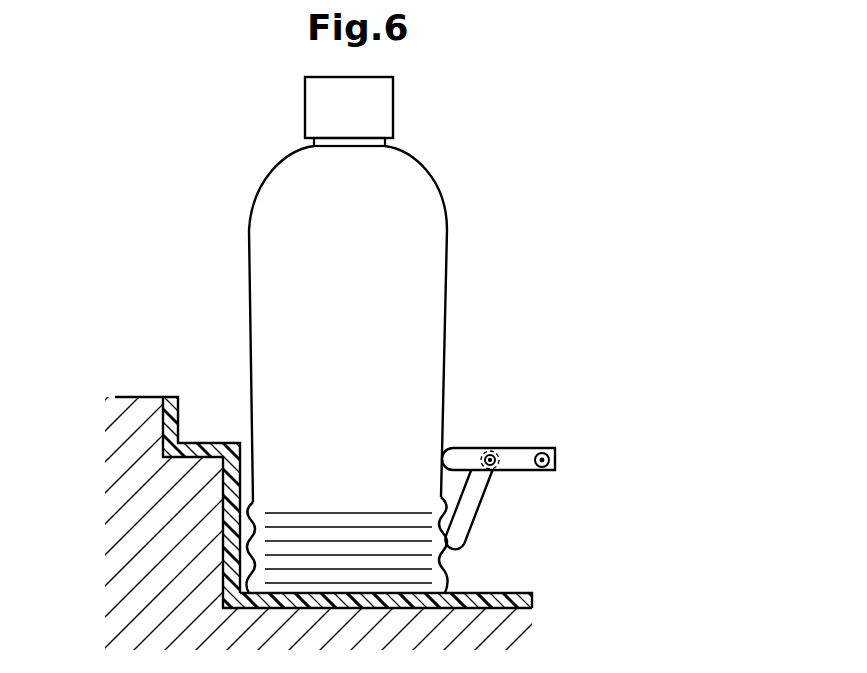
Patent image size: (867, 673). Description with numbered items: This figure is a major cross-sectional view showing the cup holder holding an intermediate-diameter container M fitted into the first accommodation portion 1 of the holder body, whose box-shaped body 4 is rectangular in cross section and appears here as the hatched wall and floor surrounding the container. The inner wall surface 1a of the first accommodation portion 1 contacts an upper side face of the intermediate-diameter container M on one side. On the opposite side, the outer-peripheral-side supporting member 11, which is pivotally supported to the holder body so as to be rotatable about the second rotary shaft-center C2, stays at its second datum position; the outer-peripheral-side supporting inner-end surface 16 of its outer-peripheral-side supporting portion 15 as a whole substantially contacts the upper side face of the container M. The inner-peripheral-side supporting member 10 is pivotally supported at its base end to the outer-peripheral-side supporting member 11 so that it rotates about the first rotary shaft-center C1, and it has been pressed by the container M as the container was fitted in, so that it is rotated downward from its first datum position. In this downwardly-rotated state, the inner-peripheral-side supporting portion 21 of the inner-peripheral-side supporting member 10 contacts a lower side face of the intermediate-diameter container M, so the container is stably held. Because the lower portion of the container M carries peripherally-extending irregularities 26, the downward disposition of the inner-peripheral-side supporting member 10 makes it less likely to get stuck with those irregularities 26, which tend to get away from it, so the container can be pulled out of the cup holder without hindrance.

The intermediate-diameter container M is at (448, 335).
The box-shaped body 4 is at (210, 448).
The inner wall surface 1a is at (243, 453).
The first accommodation portion 1 is at (505, 582).
The peripherally-extending irregularities 26 is at (450, 567).
The outer-peripheral-side supporting member 11 is at (535, 395).
The outer-peripheral-side supporting portion 15 is at (490, 395).
The outer-peripheral-side supporting inner-end surface 16 is at (442, 456).
The first rotary shaft-center C1 is at (491, 452).
The second rotary shaft-center C2 is at (548, 437).
The inner-peripheral-side supporting member 10 is at (531, 515).
The inner-peripheral-side supporting portion 21 is at (458, 542).